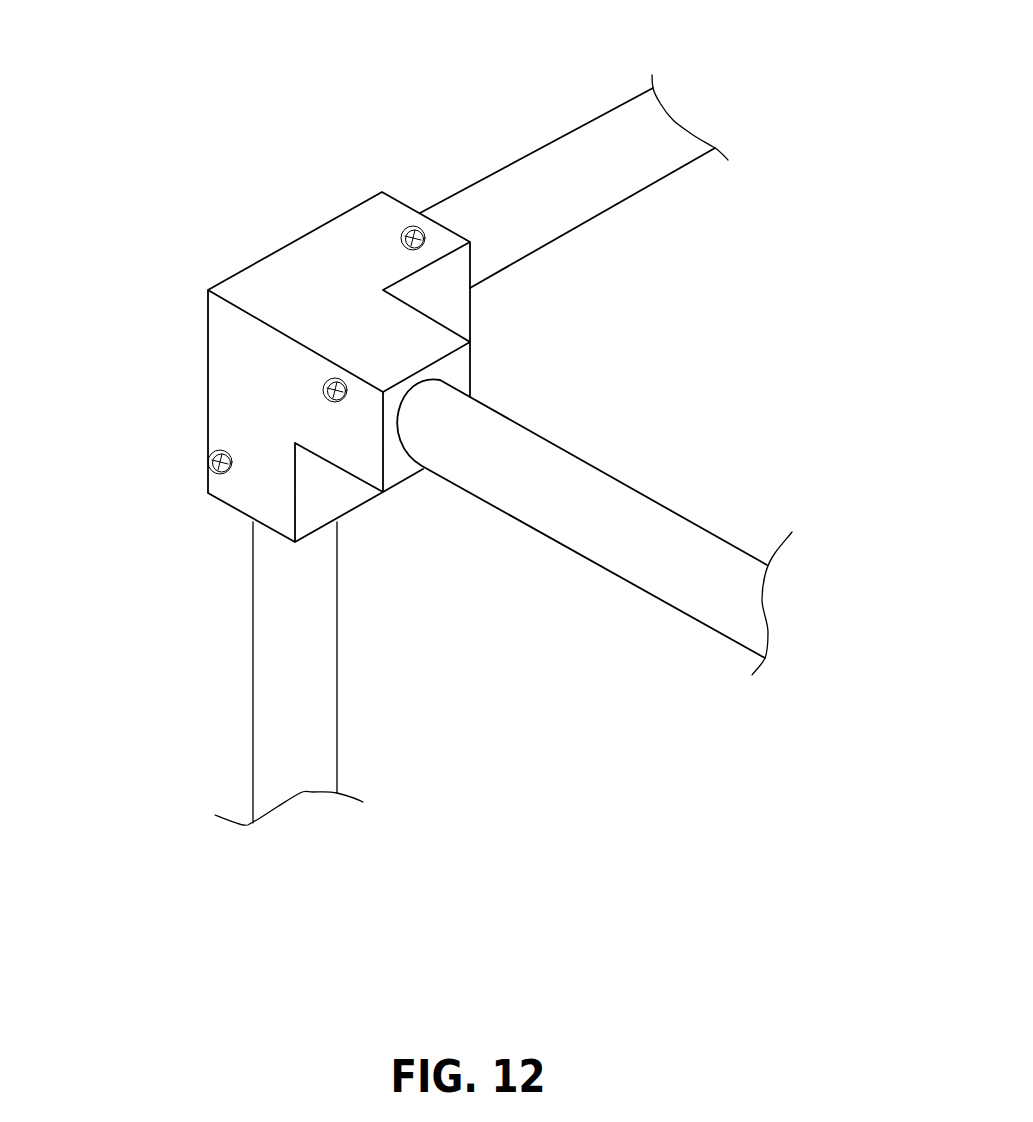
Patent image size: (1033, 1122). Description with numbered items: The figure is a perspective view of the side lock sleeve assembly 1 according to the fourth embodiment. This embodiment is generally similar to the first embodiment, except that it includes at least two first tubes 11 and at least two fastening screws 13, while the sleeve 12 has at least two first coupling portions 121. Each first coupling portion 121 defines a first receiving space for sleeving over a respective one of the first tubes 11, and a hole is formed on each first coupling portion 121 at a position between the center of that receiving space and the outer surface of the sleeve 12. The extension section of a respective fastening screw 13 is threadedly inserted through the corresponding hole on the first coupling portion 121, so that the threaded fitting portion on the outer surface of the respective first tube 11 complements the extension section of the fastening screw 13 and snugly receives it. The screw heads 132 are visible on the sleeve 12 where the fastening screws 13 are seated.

The side lock sleeve assembly 1 is at (172, 134).
The first tube 11 is at (278, 700).
The sleeve 12 is at (179, 259).
The first coupling portion 121 is at (412, 217).
The fastening screw 13 is at (392, 212).
The screw head 132 is at (427, 235).